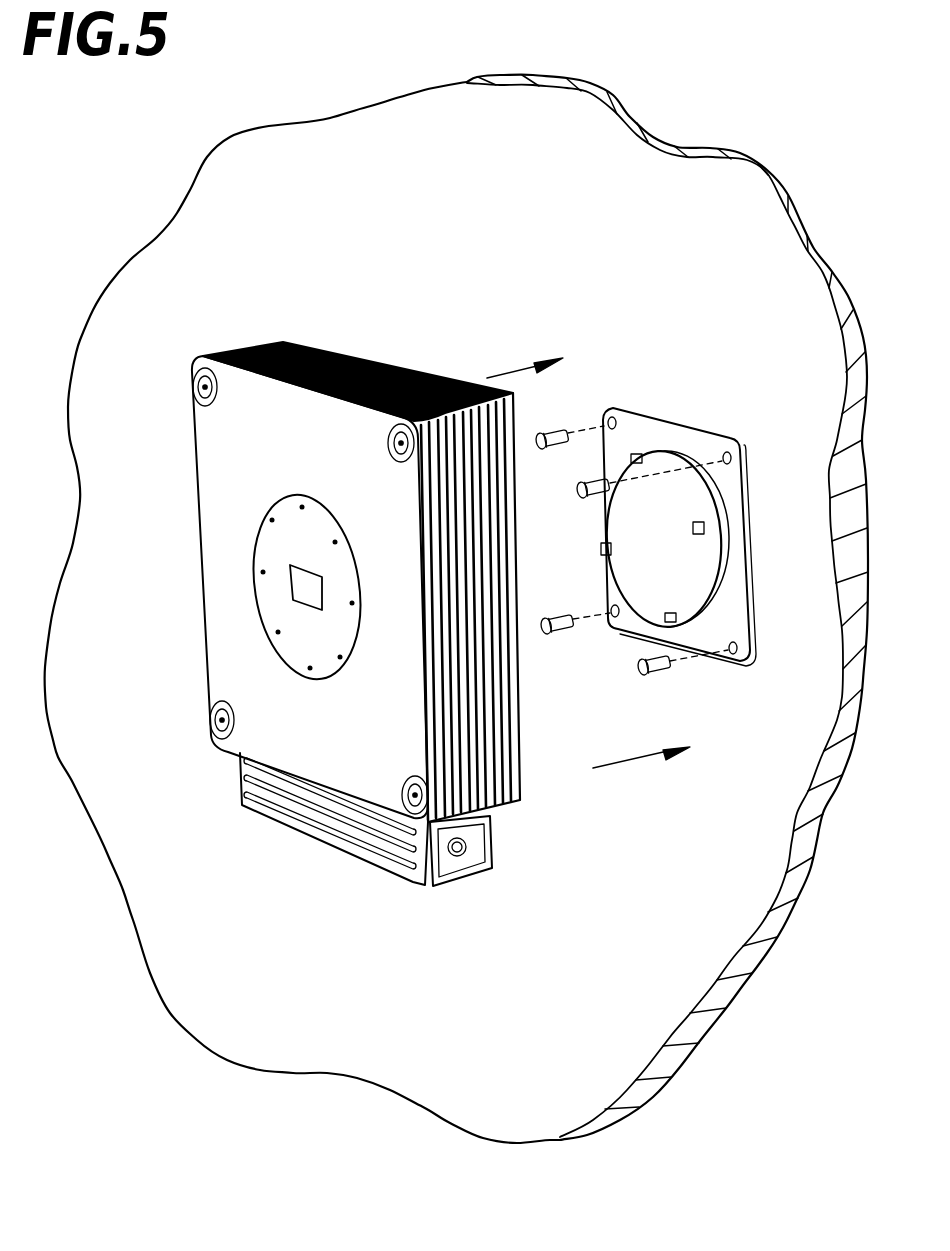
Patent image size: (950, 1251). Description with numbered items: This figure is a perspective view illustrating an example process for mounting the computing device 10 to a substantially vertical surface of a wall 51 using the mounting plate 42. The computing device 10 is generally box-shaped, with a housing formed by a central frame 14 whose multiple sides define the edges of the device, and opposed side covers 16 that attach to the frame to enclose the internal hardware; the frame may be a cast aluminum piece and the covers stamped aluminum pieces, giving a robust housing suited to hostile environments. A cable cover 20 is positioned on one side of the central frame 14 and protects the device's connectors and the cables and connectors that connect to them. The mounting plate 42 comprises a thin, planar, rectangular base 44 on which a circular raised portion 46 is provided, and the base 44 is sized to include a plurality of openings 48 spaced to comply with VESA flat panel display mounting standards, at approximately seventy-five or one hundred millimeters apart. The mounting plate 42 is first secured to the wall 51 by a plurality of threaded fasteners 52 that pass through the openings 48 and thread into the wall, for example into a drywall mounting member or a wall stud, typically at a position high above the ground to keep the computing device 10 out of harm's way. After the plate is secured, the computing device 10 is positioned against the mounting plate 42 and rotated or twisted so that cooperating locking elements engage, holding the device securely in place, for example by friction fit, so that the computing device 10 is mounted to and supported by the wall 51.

The computing device 10 is at (362, 529).
The central frame 14 is at (413, 377).
The side covers 16 is at (223, 646).
The cable cover 20 is at (348, 852).
The mounting plate 42 is at (672, 507).
The base 44 is at (707, 640).
The circular raised portion 46 is at (678, 565).
The openings 48 is at (622, 408).
The wall 51 is at (490, 970).
The threaded fasteners 52 is at (552, 449).